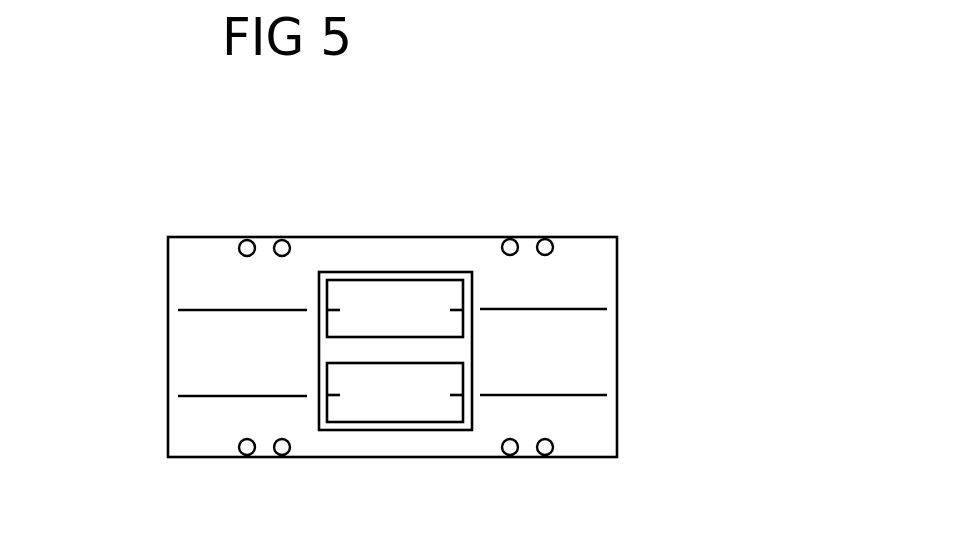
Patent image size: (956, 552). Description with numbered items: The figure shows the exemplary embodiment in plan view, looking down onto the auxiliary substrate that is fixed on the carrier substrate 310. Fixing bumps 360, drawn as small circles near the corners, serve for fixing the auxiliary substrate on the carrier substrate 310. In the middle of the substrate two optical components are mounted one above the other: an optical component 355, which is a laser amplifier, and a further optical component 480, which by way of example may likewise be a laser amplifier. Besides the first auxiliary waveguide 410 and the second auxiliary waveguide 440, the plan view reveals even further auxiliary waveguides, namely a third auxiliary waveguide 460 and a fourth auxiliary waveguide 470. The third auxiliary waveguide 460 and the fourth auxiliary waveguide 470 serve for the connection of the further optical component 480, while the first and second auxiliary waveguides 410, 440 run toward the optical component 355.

The carrier substrate 310 is at (187, 267).
The fixing bumps 360 is at (542, 247).
The further optical component 480 is at (395, 300).
The optical component 355 is at (388, 402).
The third auxiliary waveguide 460 is at (197, 312).
The fourth auxiliary waveguide 470 is at (557, 312).
The second auxiliary waveguide 440 is at (193, 398).
The first auxiliary waveguide 410 is at (577, 397).